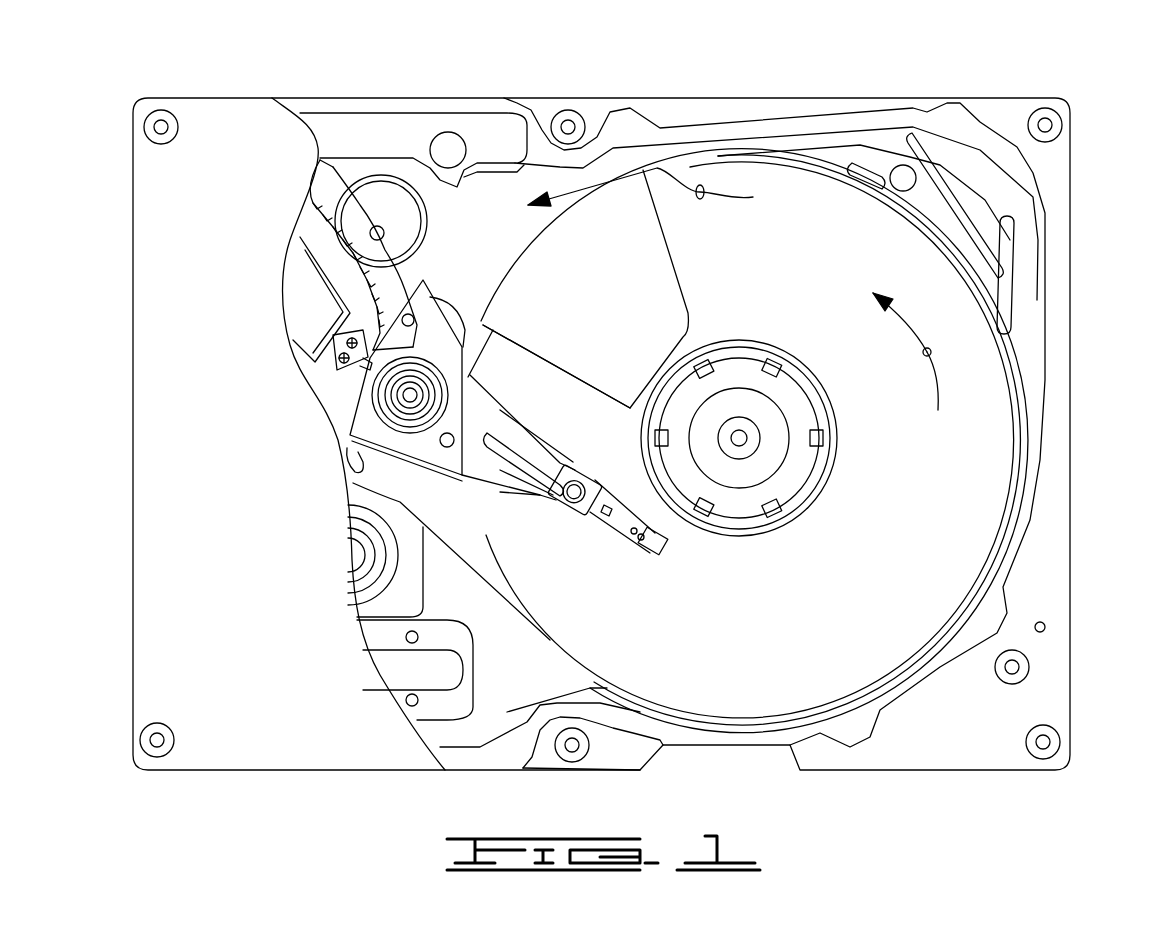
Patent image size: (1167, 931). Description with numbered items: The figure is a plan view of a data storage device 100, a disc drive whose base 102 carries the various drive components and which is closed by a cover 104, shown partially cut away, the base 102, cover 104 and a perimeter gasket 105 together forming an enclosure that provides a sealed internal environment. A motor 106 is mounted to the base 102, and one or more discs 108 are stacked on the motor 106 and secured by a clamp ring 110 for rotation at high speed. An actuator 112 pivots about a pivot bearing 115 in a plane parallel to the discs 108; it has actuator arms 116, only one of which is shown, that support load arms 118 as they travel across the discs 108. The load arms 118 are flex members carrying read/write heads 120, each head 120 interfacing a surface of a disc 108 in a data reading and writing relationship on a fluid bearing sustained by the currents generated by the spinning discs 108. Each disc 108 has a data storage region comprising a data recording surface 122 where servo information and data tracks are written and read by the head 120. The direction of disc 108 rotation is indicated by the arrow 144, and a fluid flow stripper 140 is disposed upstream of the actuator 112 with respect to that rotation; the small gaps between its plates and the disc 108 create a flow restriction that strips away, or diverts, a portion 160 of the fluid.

The data storage device 100 is at (288, 70).
The base 102 is at (992, 775).
The cover 104 is at (165, 570).
The perimeter gasket 105 is at (513, 747).
The motor 106 is at (745, 443).
The disc 108 is at (975, 545).
The clamp ring 110 is at (833, 440).
The actuator 112 is at (353, 487).
The pivot bearing 115 is at (407, 395).
The actuator arm 116 is at (510, 497).
The load arm 118 is at (618, 540).
The read/write head 120 is at (660, 547).
The data recording surface 122 is at (807, 679).
The fluid flow stripper 140 is at (672, 252).
The direction of disc rotation 144 is at (930, 349).
The diverted fluid portion 160 is at (703, 185).